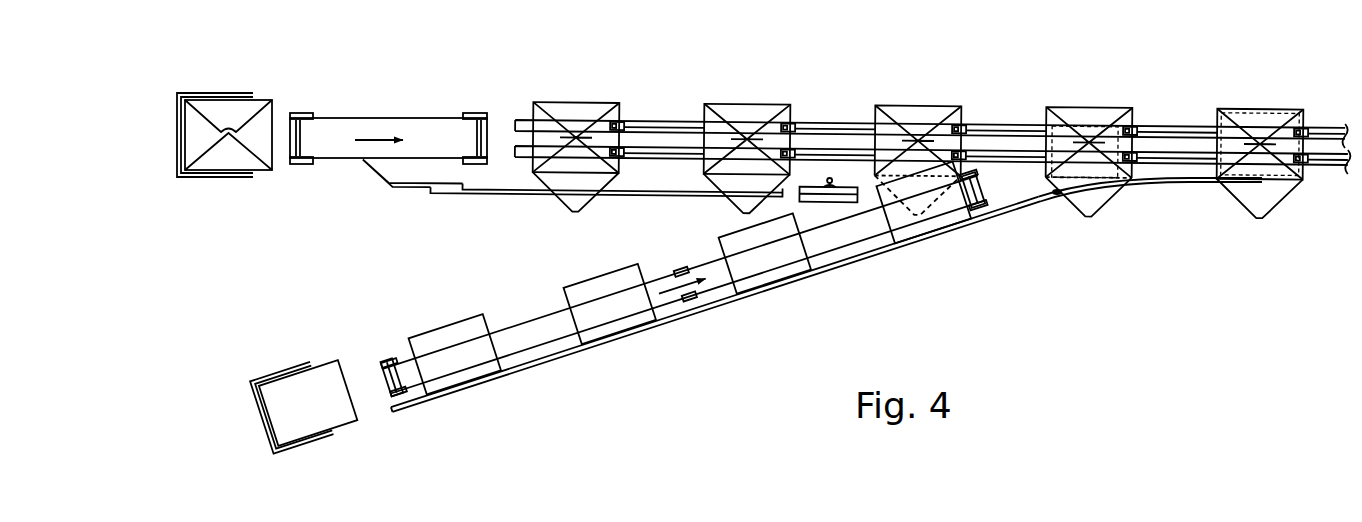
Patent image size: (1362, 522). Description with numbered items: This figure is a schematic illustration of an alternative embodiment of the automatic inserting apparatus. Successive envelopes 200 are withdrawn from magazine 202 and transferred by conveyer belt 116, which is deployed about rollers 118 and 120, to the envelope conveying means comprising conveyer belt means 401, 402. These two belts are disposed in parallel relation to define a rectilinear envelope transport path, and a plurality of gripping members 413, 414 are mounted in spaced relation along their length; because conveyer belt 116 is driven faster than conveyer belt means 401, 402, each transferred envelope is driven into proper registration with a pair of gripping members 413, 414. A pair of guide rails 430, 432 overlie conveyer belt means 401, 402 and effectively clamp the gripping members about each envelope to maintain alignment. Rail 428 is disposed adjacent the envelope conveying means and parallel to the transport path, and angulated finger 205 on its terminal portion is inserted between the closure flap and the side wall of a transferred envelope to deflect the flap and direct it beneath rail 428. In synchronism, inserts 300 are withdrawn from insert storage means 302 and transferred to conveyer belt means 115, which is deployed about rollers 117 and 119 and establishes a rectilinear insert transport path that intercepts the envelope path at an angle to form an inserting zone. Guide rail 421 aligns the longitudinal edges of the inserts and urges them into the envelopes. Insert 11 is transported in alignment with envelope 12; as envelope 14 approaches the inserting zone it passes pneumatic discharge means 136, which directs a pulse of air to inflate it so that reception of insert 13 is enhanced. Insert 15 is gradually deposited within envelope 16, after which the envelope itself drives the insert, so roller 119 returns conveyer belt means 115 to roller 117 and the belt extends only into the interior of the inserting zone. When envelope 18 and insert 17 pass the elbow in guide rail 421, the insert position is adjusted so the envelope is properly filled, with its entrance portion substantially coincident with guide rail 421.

The magazine 202 is at (218, 93).
The envelope 200 is at (262, 86).
The roller 118 is at (296, 113).
The conveyer belt 116 is at (353, 118).
The roller 120 is at (472, 113).
The angulated finger 205 is at (373, 179).
The rail 428 is at (513, 194).
The envelope 12 is at (562, 99).
The guide rail 432 is at (627, 119).
The conveyer belt means 402 is at (670, 132).
The envelope 14 is at (742, 99).
The gripping member 414 is at (792, 124).
The gripping member 413 is at (794, 150).
The envelope 16 is at (913, 99).
The envelope 18 is at (1082, 99).
The guide rail 430 is at (666, 157).
The conveyer belt means 401 is at (690, 157).
The pneumatic discharge means 136 is at (838, 200).
The insert 13 is at (732, 230).
The insert 17 is at (1052, 193).
The roller 119 is at (977, 206).
The insert 15 is at (887, 240).
The insert 11 is at (598, 271).
The conveyer belt means 115 is at (670, 268).
The roller 117 is at (388, 362).
The guide rail 421 is at (725, 306).
The insert 300 is at (323, 354).
The insert storage means 302 is at (291, 369).